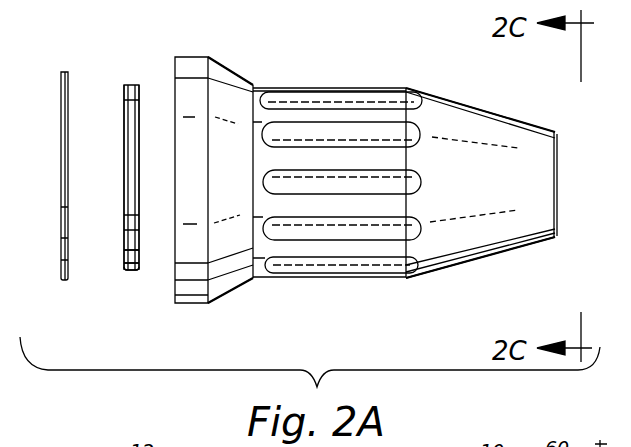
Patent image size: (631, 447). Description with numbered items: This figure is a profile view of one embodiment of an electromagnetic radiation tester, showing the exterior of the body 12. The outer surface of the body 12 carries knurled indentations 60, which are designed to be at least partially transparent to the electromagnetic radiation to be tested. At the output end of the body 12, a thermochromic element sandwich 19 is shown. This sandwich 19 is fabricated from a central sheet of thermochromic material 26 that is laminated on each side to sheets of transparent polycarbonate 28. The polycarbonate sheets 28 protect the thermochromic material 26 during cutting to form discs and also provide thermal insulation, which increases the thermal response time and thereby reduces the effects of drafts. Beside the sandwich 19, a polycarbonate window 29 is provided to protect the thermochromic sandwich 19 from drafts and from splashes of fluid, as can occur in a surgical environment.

The body 12 is at (381, 88).
The thermochromic element sandwich 19 is at (130, 280).
The thermochromic material 26 is at (132, 85).
The transparent polycarbonate sheets 28 is at (125, 86).
The polycarbonate window 29 is at (62, 84).
The knurled indentations 60 is at (367, 268).